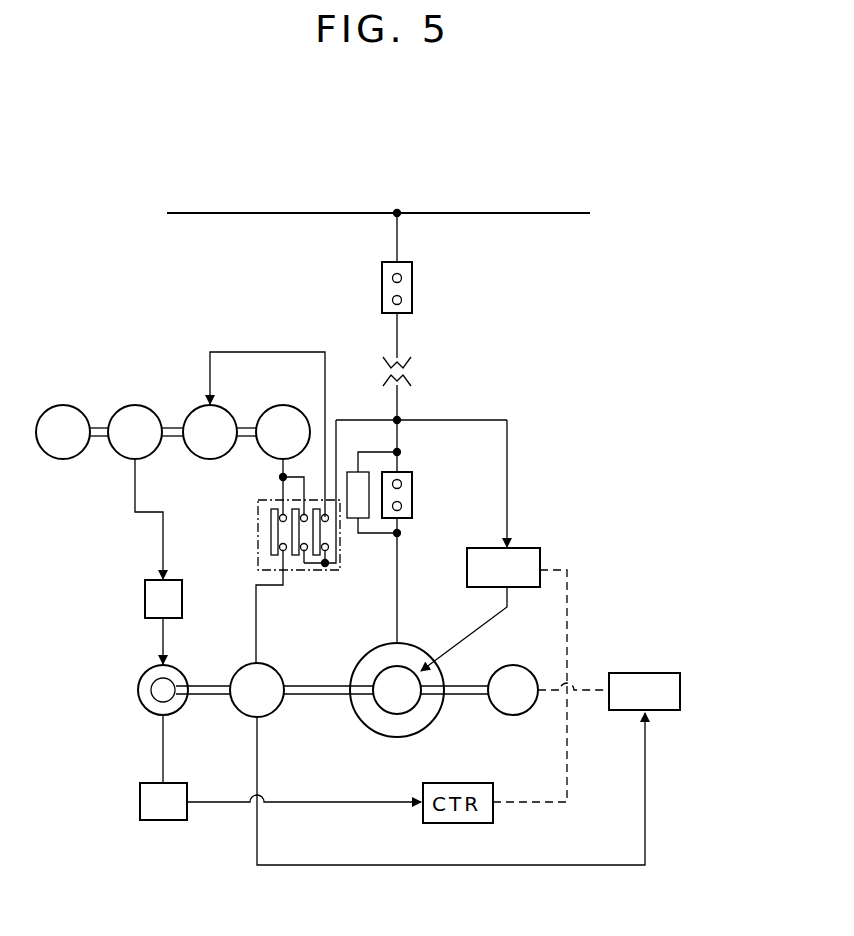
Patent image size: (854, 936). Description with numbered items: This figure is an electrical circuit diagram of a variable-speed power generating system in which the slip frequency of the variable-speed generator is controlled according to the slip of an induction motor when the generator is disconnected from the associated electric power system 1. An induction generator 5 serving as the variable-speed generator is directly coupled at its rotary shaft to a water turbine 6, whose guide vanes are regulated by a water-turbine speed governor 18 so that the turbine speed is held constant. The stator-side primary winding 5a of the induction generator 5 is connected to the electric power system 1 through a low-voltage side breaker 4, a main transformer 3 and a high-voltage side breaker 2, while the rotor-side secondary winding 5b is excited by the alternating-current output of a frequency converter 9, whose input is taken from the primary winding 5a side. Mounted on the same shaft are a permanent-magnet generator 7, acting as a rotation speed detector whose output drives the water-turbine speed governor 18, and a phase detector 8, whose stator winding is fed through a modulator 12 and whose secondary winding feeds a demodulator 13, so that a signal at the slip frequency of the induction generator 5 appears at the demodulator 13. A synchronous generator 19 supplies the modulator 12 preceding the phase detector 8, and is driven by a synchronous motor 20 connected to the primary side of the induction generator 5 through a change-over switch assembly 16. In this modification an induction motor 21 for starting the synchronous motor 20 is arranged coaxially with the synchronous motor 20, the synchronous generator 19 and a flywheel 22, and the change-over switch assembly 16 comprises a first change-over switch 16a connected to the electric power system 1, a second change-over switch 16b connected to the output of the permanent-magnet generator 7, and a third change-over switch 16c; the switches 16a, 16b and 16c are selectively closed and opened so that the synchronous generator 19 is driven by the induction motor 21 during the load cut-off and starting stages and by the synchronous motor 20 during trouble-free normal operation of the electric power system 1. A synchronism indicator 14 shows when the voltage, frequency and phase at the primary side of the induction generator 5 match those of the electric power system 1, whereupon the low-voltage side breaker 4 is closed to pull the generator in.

The electric power system 1 is at (526, 213).
The high-voltage side breaker 2 is at (412, 283).
The main transformer 3 is at (413, 373).
The low-voltage side breaker 4 is at (412, 501).
The induction generator 5 is at (391, 684).
The primary winding 5a is at (414, 649).
The secondary winding 5b is at (388, 714).
The water turbine 6 is at (518, 666).
The permanent-magnet generator 7 is at (270, 667).
The phase detector 8 is at (177, 676).
The frequency converter 9 is at (535, 548).
The modulator 12 is at (145, 595).
The demodulator 13 is at (175, 821).
The synchronism indicator 14 is at (350, 472).
The change-over switch assembly 16 is at (258, 554).
The first change-over switch 16a is at (332, 538).
The second change-over switch 16b is at (306, 567).
The third change-over switch 16c is at (271, 531).
The water-turbine speed governor 18 is at (645, 672).
The synchronous generator 19 is at (131, 405).
The synchronous motor 20 is at (214, 461).
The induction motor 21 is at (279, 405).
The flywheel 22 is at (58, 405).